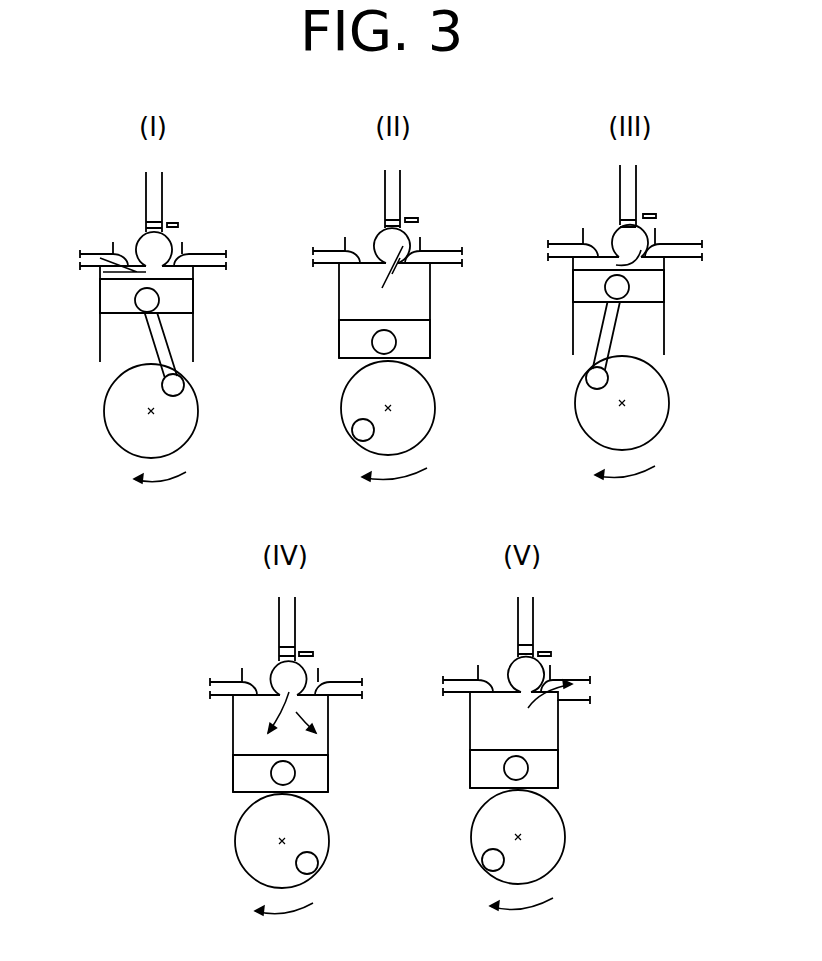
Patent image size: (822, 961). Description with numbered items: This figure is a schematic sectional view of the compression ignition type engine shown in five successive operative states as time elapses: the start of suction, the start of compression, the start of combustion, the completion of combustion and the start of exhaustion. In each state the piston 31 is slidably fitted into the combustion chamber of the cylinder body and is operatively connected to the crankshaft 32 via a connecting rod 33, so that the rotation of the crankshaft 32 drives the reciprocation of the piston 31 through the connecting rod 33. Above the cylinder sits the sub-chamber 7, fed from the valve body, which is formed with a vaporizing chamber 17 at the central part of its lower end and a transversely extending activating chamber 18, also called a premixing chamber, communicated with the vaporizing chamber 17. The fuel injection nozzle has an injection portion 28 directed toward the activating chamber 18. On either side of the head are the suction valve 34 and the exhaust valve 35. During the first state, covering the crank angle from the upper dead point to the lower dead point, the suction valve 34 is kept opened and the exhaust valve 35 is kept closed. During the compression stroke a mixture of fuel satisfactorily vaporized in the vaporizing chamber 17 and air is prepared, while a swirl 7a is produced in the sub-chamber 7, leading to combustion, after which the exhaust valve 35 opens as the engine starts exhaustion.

The sub-chamber 7 is at (140, 242).
The swirl 7a is at (641, 248).
The vaporizing chamber 17 is at (150, 228).
The activating chamber 18 is at (150, 228).
The injection portion 28 is at (176, 223).
The piston 31 is at (187, 306).
The crankshaft 32 is at (155, 412).
The connecting rod 33 is at (170, 352).
The suction valve 34 is at (103, 285).
The exhaust valve 35 is at (188, 270).